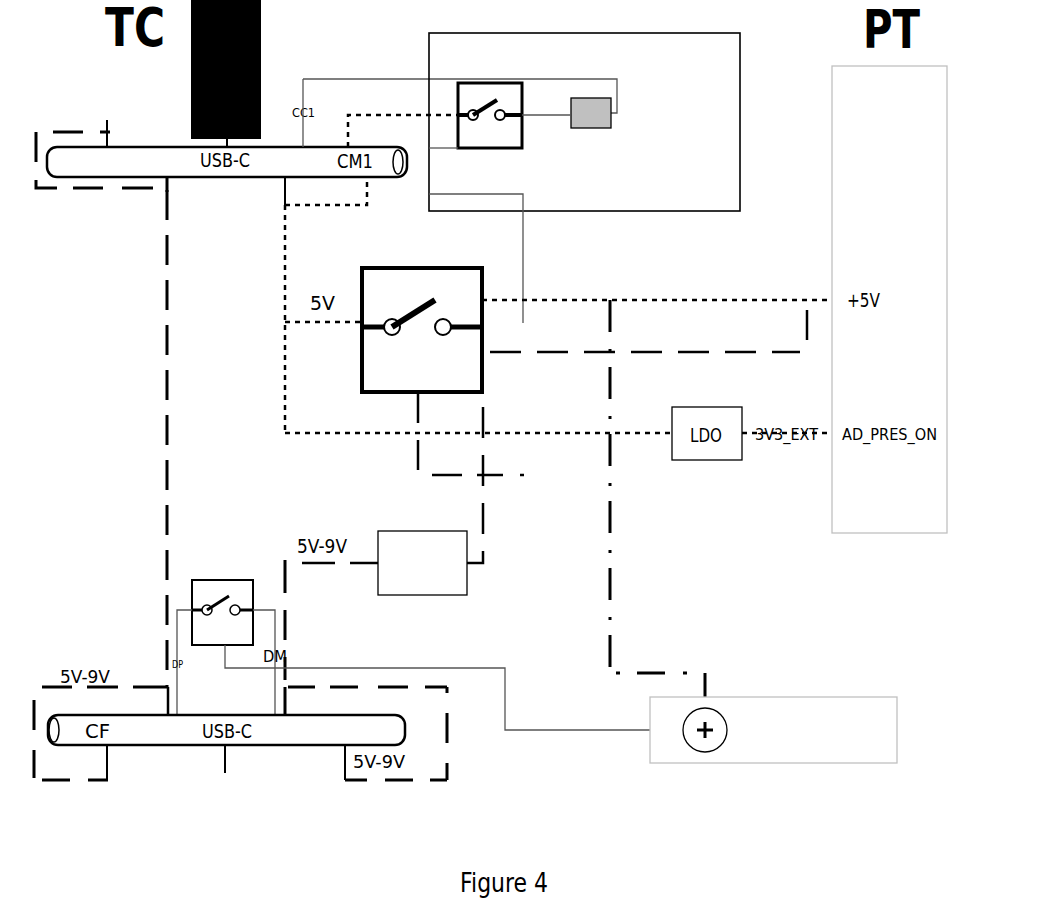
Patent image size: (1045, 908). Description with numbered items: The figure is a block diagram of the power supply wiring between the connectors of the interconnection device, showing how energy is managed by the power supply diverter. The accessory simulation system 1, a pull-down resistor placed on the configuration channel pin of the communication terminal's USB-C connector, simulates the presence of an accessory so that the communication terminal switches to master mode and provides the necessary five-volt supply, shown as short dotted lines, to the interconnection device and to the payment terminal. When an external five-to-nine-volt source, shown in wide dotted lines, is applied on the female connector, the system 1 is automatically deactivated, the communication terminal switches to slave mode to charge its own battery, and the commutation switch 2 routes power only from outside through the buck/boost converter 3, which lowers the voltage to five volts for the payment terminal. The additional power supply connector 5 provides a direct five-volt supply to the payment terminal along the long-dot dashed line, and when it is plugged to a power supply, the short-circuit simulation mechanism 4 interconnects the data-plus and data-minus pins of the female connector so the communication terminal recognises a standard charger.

The accessory simulation system 1 is at (584, 178).
The interconnection device commutation switch 2 is at (422, 330).
The buck/boost converter 3 is at (422, 563).
The short-circuit simulation mechanism 4 is at (222, 599).
The additional power supply connector 5 is at (773, 730).